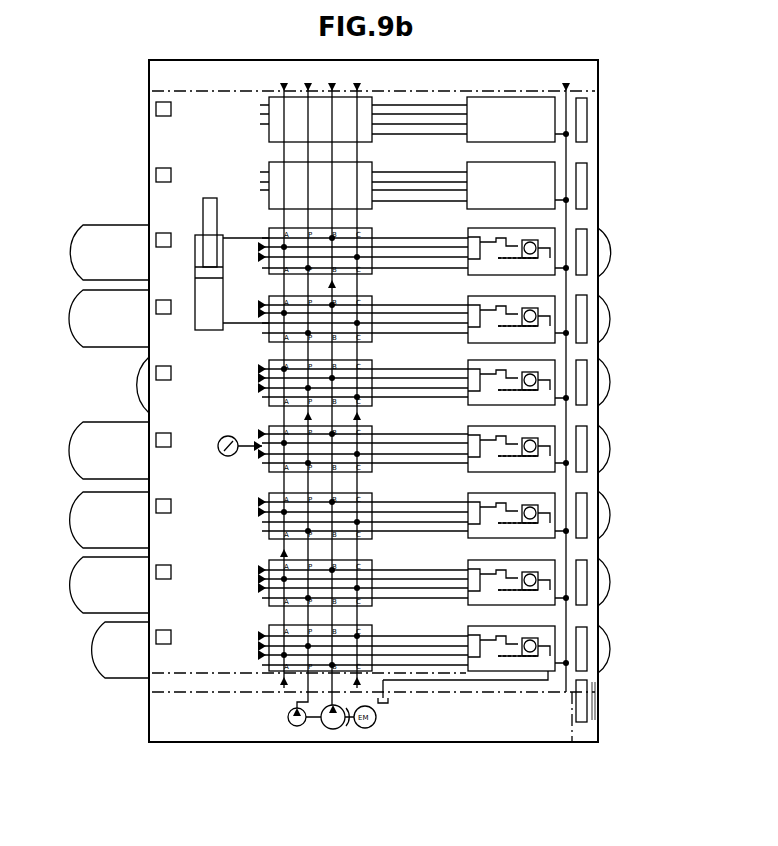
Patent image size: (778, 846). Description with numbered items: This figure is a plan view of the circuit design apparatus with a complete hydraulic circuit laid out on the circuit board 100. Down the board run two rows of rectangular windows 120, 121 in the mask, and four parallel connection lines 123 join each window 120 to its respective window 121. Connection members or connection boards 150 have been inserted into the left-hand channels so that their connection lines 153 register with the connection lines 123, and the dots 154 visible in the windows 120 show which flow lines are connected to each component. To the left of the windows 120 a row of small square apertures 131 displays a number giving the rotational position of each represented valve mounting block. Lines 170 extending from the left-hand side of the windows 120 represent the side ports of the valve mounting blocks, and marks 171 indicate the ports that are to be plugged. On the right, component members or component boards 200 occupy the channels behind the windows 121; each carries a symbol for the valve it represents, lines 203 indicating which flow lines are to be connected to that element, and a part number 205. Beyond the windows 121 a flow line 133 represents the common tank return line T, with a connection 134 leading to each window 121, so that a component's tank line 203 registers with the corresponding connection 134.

The circuit board 100 is at (438, 761).
The window 120 is at (268, 466).
The window 121 is at (470, 470).
The connection lines 123 is at (410, 340).
The small square aperture 131 is at (175, 646).
The flow line 133 is at (567, 418).
The connection 134 is at (600, 692).
The connection member 150 is at (83, 426).
The connection lines 153 is at (296, 322).
The dot 154 is at (355, 322).
The lines 170 is at (268, 566).
The marks 171 is at (332, 470).
The component member 200 is at (550, 645).
The lines 203 is at (483, 672).
The part number 205 is at (584, 276).